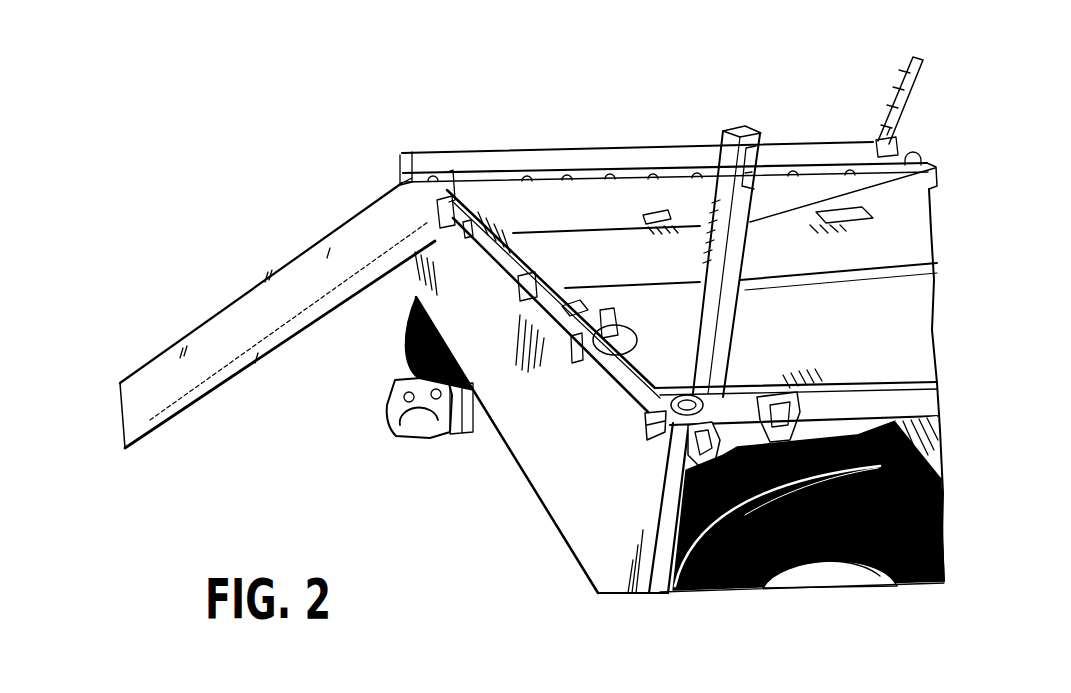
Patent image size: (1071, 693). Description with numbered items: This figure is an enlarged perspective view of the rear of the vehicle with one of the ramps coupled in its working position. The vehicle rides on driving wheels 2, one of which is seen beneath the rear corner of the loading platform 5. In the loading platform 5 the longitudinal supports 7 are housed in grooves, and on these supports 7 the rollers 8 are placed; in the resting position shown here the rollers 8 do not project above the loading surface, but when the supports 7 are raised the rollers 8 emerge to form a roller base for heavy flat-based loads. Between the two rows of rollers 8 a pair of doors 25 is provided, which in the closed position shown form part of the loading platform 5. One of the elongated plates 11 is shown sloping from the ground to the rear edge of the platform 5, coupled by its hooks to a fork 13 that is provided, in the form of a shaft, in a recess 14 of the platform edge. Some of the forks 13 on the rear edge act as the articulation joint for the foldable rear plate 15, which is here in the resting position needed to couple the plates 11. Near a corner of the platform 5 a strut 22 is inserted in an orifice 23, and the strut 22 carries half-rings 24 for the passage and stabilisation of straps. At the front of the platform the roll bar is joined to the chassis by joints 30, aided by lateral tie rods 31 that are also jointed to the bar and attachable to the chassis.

The driving wheel 2 is at (915, 582).
The loading platform 5 is at (492, 163).
The longitudinal support 7 is at (636, 178).
The roller 8 is at (608, 176).
The elongated plate 11 is at (258, 296).
The fork 13 is at (790, 398).
The recess 14 is at (767, 392).
The rear plate 15 is at (510, 421).
The strut 22 is at (743, 152).
The orifice 23 is at (737, 450).
The half-ring 24 is at (725, 280).
The door 25 is at (577, 247).
The joint 30 is at (878, 137).
The lateral tie rod 31 is at (910, 80).